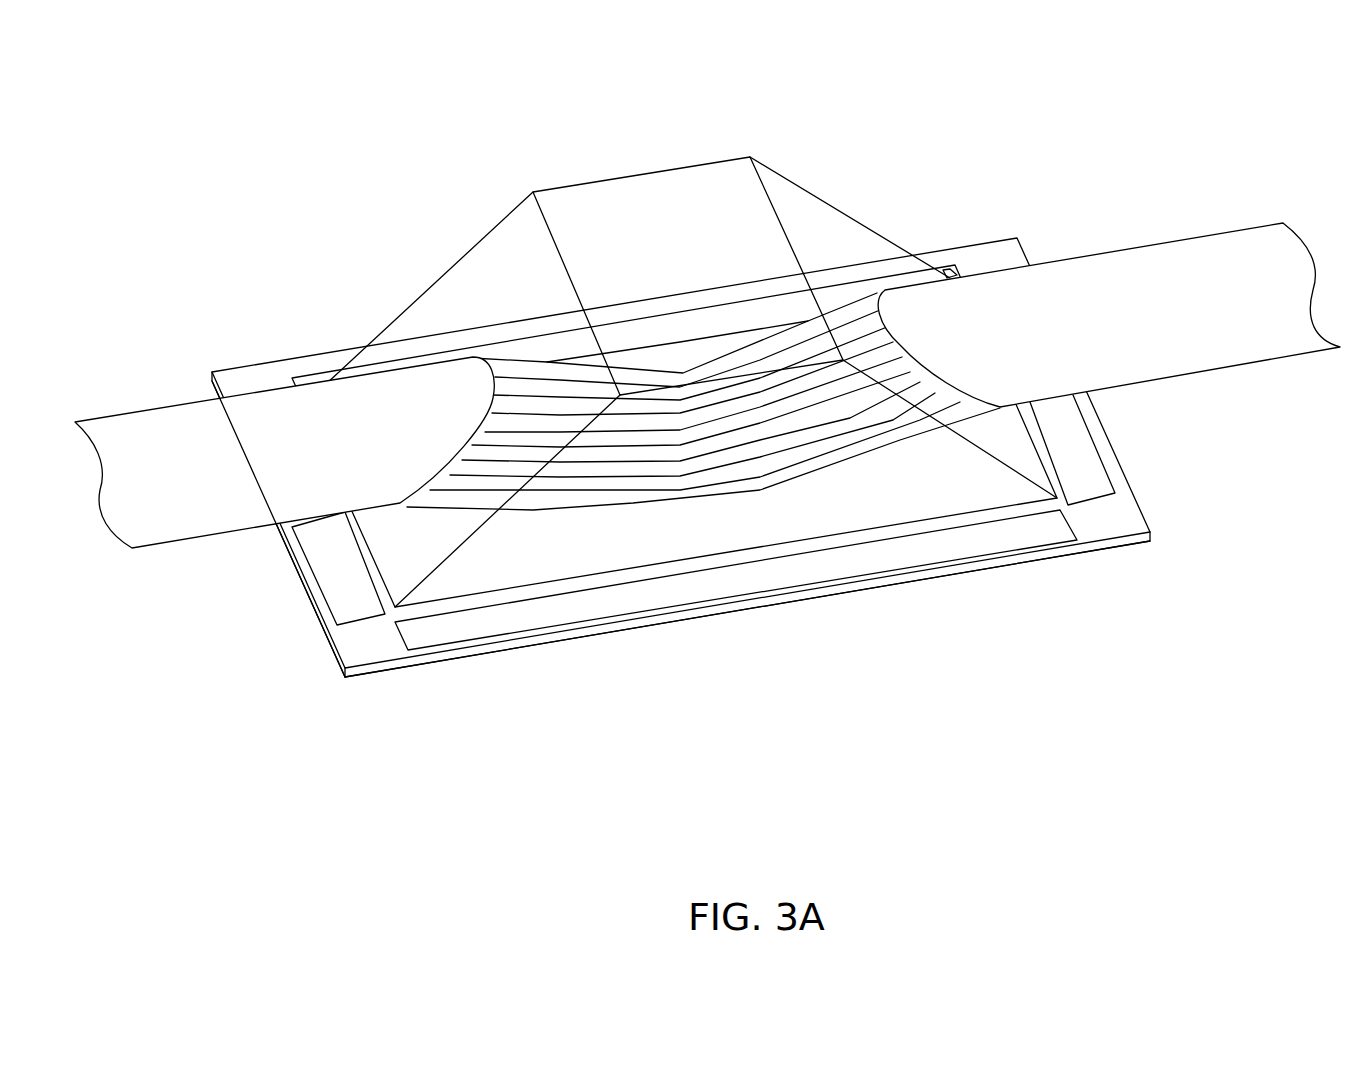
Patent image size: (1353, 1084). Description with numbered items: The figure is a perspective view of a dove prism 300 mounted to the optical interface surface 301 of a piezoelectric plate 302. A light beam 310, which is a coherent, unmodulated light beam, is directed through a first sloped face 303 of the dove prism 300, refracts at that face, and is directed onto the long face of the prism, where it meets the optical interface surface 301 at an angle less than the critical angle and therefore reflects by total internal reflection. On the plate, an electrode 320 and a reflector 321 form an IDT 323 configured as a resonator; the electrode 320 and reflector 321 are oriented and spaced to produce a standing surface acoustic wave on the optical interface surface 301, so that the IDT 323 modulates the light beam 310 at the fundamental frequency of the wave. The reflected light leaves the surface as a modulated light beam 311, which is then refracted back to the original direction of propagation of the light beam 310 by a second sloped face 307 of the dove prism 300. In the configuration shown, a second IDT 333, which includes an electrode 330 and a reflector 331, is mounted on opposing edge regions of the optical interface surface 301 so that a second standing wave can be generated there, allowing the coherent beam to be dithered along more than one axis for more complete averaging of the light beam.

The dove prism 300 is at (390, 100).
The optical interface surface 301 is at (260, 377).
The piezoelectric plate 302 is at (1100, 550).
The first sloped face 303 is at (817, 222).
The second sloped face 307 is at (430, 310).
The light beam 310 is at (1195, 280).
The modulated light beam 311 is at (145, 445).
The electrode 320 is at (745, 580).
The reflector 321 is at (947, 275).
The IDT 323 is at (568, 693).
The electrode 330 is at (340, 572).
The reflector 331 is at (1072, 440).
The second IDT 333 is at (303, 656).